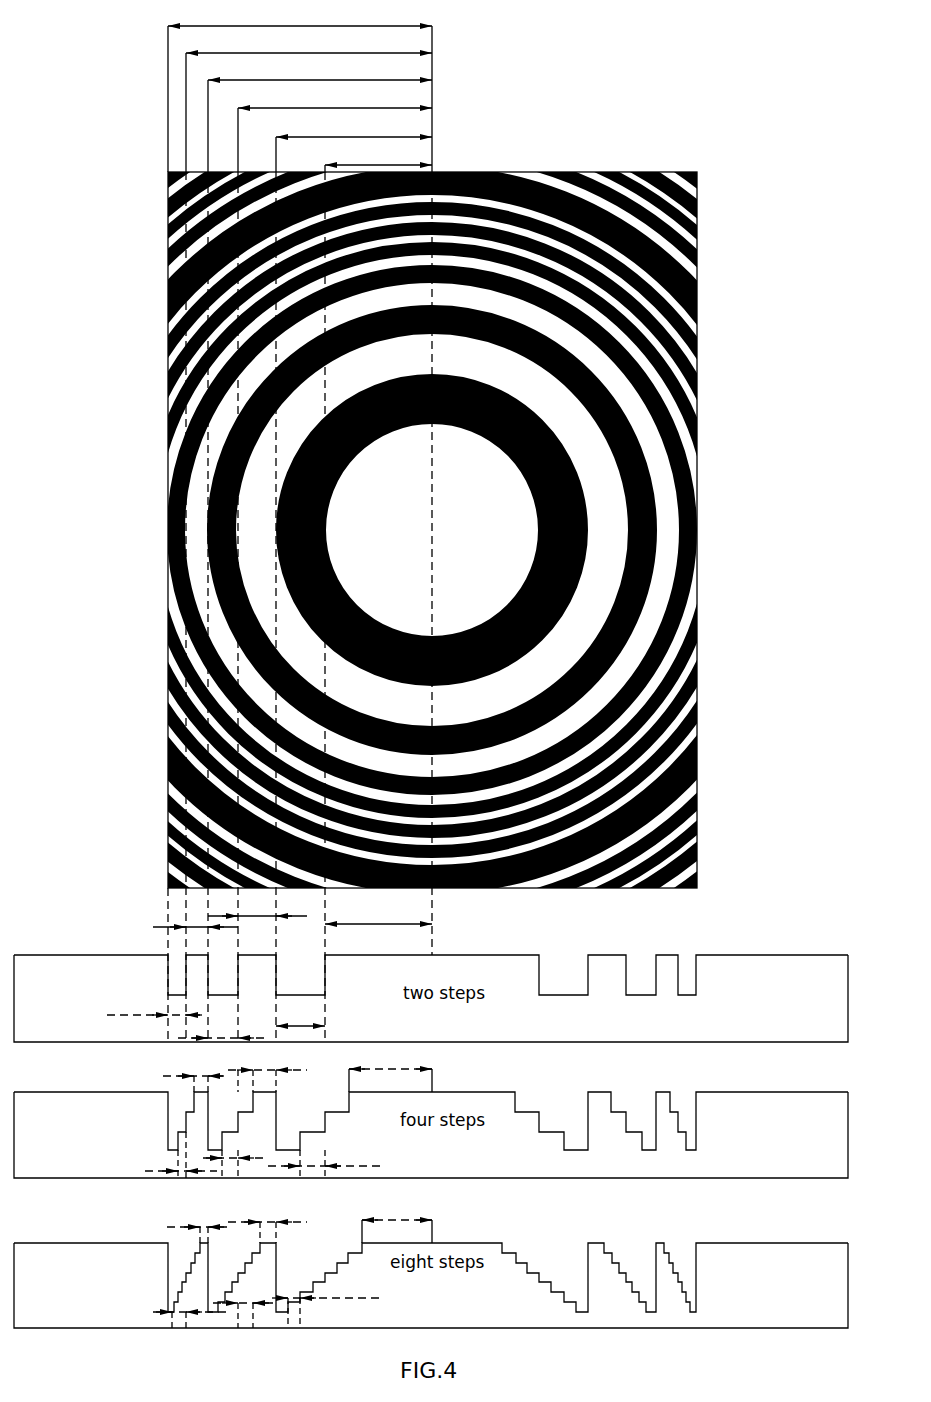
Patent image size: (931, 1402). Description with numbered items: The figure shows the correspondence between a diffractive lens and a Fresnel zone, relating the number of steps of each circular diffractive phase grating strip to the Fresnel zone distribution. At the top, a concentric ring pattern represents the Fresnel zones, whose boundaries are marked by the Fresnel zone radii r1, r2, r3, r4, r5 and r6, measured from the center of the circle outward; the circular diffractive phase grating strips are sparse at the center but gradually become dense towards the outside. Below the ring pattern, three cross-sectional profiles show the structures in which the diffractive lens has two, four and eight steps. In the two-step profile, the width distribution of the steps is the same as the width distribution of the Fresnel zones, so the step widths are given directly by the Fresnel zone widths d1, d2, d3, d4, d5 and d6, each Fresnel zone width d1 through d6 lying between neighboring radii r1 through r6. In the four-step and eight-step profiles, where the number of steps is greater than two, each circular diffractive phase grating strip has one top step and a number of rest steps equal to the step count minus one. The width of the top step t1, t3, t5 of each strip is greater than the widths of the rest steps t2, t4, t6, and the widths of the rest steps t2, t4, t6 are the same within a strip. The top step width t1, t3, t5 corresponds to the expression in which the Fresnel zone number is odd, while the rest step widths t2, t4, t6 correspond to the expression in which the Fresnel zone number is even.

The Fresnel zone radius r1 is at (378, 155).
The Fresnel zone radius r2 is at (354, 127).
The Fresnel zone radius r3 is at (335, 98).
The Fresnel zone radius r4 is at (320, 70).
The Fresnel zone radius r5 is at (309, 43).
The Fresnel zone radius r6 is at (300, 16).
The Fresnel zone width d1 is at (378, 914).
The Fresnel zone width d2 is at (300, 1013).
The Fresnel zone width d3 is at (257, 905).
The Fresnel zone width d4 is at (223, 1027).
The Fresnel zone width d5 is at (195, 917).
The Fresnel zone width d6 is at (154, 1003).
The step width of the circular diffractive phase grating strip t1 is at (390, 1146).
The step width of the circular diffractive phase grating strip t2 is at (329, 1221).
The step width of the circular diffractive phase grating strip t3 is at (267, 1135).
The step width of the circular diffractive phase grating strip t4 is at (238, 1244).
The step width of the circular diffractive phase grating strip t5 is at (195, 1138).
The step width of the circular diffractive phase grating strip t6 is at (186, 1255).